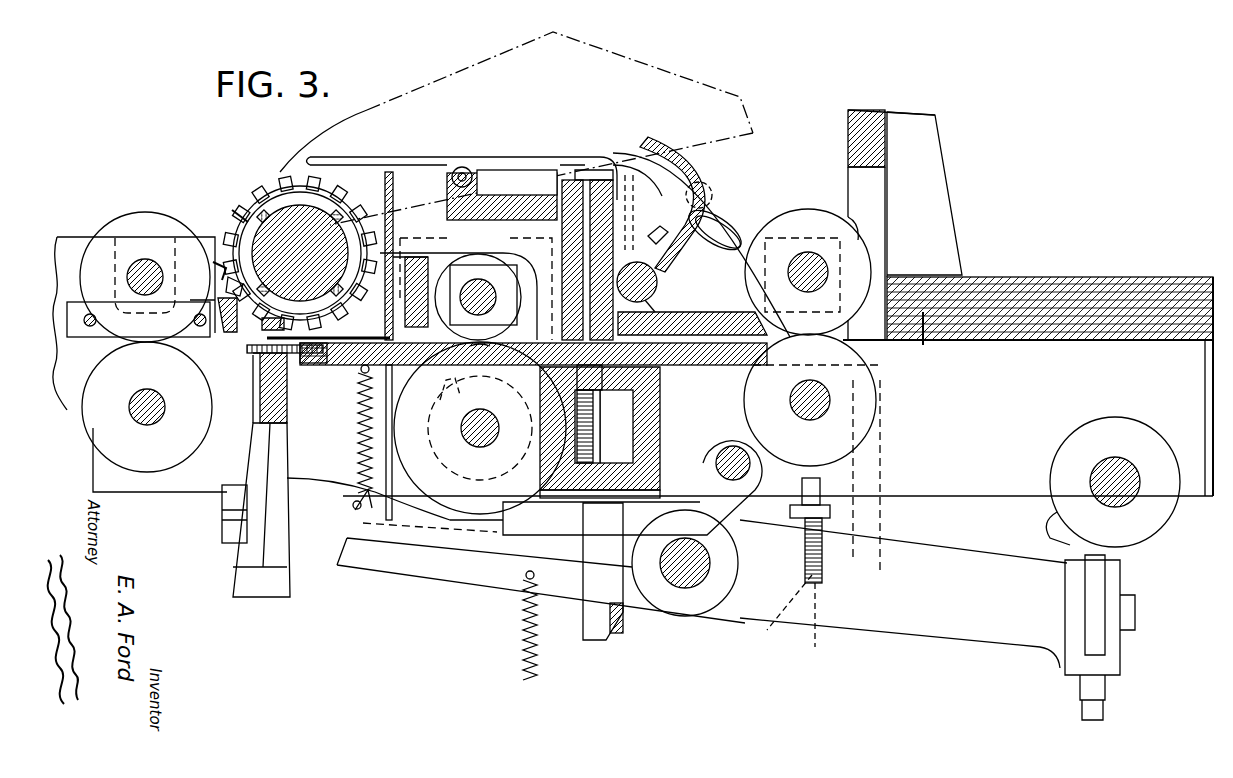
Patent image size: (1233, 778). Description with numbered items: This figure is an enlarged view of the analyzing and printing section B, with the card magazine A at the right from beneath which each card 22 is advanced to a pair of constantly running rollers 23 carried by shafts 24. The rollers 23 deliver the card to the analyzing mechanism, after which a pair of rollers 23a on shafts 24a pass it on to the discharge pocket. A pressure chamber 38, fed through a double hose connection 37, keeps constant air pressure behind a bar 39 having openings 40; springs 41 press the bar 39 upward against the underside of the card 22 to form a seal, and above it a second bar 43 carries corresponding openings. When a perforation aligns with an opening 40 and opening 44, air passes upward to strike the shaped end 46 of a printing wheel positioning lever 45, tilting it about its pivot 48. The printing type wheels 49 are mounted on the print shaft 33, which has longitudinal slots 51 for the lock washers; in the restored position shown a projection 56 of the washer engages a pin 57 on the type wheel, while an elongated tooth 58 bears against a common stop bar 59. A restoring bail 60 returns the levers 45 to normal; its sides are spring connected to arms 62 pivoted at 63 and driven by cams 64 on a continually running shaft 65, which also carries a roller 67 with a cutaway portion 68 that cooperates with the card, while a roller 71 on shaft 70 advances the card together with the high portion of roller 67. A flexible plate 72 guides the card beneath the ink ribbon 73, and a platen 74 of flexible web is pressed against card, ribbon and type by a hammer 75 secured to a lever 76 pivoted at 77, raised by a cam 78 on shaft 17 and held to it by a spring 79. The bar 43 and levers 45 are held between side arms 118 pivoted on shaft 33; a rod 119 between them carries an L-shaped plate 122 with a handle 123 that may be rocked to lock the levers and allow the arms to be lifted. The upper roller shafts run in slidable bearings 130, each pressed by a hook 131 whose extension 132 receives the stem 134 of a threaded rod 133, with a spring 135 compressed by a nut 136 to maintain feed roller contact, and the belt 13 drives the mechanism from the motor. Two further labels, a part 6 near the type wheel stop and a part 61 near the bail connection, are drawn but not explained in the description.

The pawl 6 is at (227, 286).
The belt 13 is at (233, 336).
The shaft 17 is at (1126, 494).
The card 22 is at (512, 342).
The rollers 23 is at (797, 243).
The rollers 23a is at (112, 232).
The shafts 24 is at (808, 270).
The shafts 24a is at (146, 268).
The print shaft 33 is at (290, 222).
The double hose connection 37 is at (613, 620).
The pressure chamber 38 is at (622, 413).
The bar 39 is at (636, 337).
The openings 40 is at (606, 378).
The springs 41 is at (600, 448).
The second bar 43 is at (657, 240).
The opening 44 is at (672, 166).
The printing wheel positioning lever 45 is at (542, 170).
The end 46 is at (592, 176).
The pivot 48 is at (462, 176).
The printing type wheels 49 is at (318, 202).
The longitudinal slots 51 is at (264, 208).
The projection 56 is at (238, 222).
The pin 57 is at (268, 316).
The elongated tooth 58 is at (217, 266).
The stop bar 59 is at (228, 333).
The restoring bail 60 is at (386, 178).
The spring 61 is at (362, 400).
The arms 62 is at (385, 542).
The pivot 63 is at (752, 467).
The cams 64 is at (480, 428).
The shaft 65 is at (478, 434).
The roller 67 is at (408, 420).
The cutaway portion 68 is at (490, 348).
The shaft 70 is at (474, 280).
The roller 71 is at (490, 268).
The flexible plate 72 is at (365, 338).
The ink ribbon 73 is at (315, 342).
The platen 74 is at (253, 358).
The hammer 75 is at (286, 383).
The lever 76 is at (286, 576).
The pivot 77 is at (690, 582).
The cam 78 is at (1176, 506).
The spring 79 is at (524, 638).
The side arms 118 is at (560, 156).
The rod 119 is at (658, 284).
The L-shaped plate 122 is at (712, 190).
The handle 123 is at (724, 228).
The bearings 130 is at (898, 254).
The hook 131 is at (882, 469).
The extension 132 is at (782, 614).
The threaded rod 133 is at (802, 497).
The stem 134 is at (821, 622).
The spring 135 is at (832, 530).
The nut 136 is at (832, 513).
The card magazine A is at (943, 193).
The analyzing and printing section B is at (516, 128).